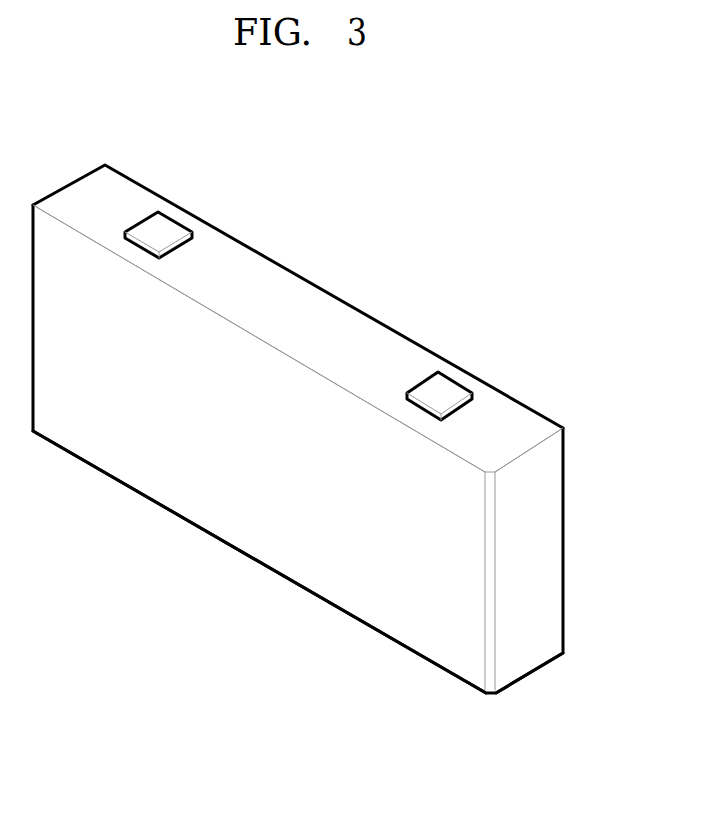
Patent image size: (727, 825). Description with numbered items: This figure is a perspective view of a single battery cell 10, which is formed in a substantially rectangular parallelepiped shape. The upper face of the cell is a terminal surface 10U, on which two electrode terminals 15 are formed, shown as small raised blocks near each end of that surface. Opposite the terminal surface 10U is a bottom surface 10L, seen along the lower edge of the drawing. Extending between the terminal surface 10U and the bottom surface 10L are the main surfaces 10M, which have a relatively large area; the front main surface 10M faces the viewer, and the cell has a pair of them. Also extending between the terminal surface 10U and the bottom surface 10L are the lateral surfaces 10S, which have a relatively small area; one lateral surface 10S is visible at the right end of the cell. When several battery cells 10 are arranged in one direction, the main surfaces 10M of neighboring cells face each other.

The battery cell 10 is at (335, 441).
The terminal surface 10U is at (493, 433).
The lateral surface 10S is at (528, 563).
The main surface 10M is at (333, 488).
The bottom surface 10L is at (413, 653).
The electrode terminal 15 is at (173, 222).